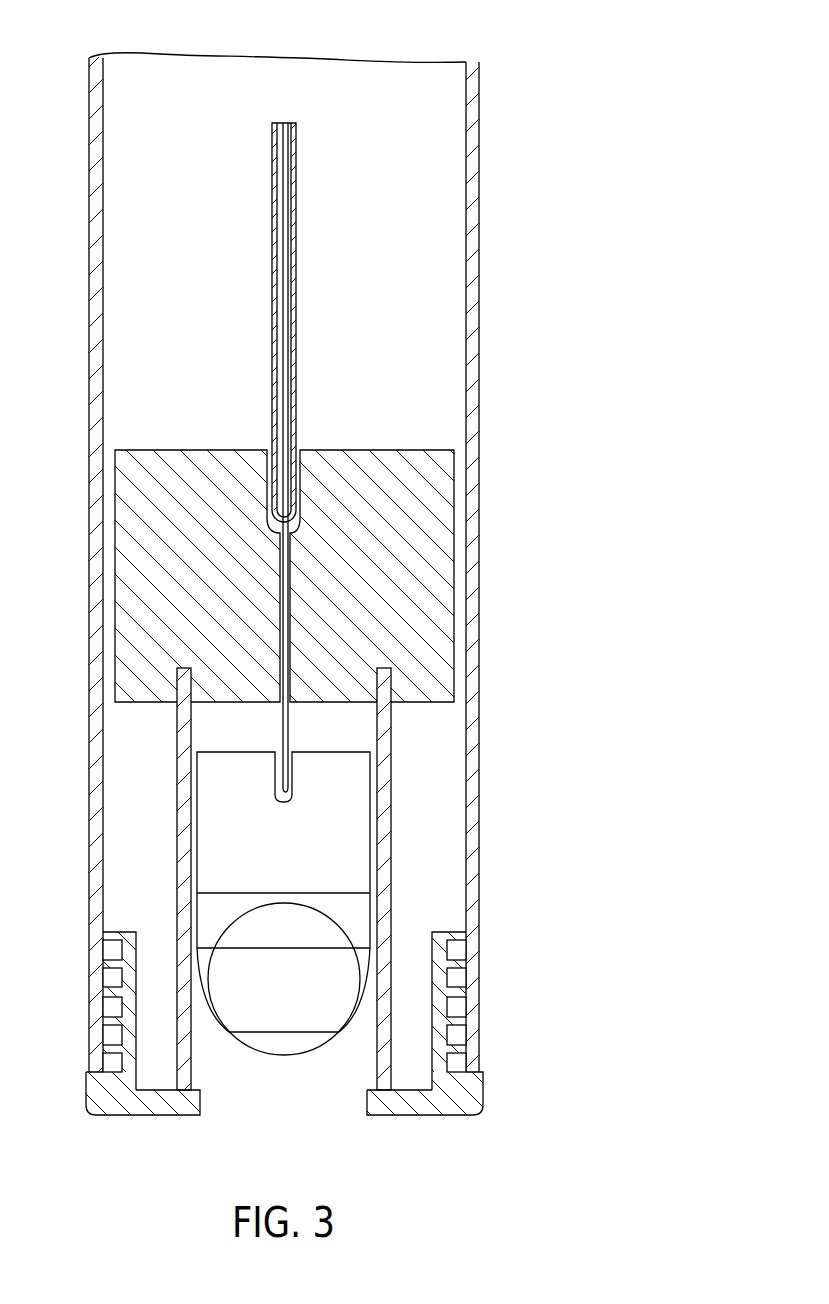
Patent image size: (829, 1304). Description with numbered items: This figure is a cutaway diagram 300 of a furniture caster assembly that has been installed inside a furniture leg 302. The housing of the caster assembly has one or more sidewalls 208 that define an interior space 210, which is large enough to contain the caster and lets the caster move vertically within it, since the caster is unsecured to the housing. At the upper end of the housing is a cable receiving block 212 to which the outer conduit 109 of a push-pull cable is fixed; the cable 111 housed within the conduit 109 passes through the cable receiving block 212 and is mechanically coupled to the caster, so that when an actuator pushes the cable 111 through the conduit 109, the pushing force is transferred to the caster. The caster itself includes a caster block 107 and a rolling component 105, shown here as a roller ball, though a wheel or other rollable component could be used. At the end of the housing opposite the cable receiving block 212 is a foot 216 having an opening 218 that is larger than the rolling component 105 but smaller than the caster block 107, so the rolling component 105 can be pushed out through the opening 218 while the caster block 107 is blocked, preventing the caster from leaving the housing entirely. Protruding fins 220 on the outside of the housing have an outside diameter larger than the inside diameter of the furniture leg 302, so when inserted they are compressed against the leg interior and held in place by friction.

The cutaway diagram 300 is at (427, 42).
The furniture leg 302 is at (480, 323).
The outer conduit 109 is at (292, 195).
The cable 111 is at (283, 290).
The cable receiving block 212 is at (335, 450).
The interior space 210 is at (252, 738).
The sidewalls 208 is at (391, 793).
The caster block 107 is at (305, 853).
The rolling component 105 is at (266, 1054).
The protruding fins 220 is at (453, 932).
The foot 216 is at (483, 1090).
The opening 218 is at (303, 1119).